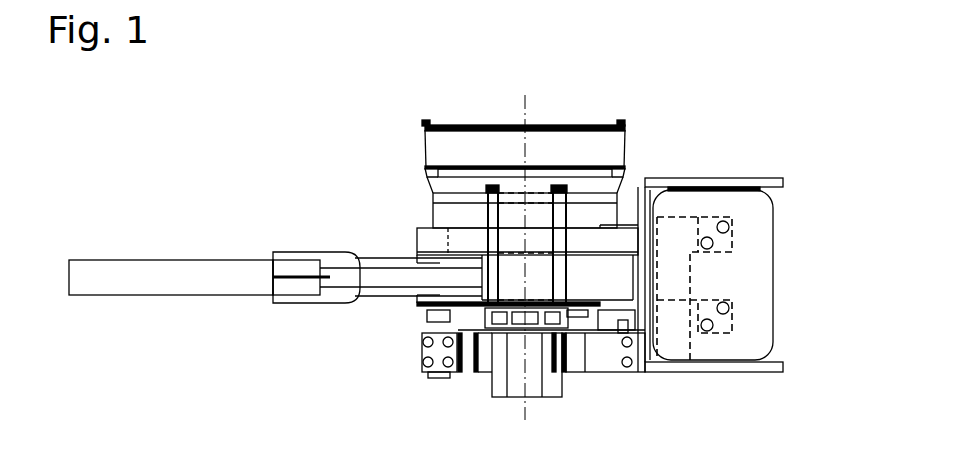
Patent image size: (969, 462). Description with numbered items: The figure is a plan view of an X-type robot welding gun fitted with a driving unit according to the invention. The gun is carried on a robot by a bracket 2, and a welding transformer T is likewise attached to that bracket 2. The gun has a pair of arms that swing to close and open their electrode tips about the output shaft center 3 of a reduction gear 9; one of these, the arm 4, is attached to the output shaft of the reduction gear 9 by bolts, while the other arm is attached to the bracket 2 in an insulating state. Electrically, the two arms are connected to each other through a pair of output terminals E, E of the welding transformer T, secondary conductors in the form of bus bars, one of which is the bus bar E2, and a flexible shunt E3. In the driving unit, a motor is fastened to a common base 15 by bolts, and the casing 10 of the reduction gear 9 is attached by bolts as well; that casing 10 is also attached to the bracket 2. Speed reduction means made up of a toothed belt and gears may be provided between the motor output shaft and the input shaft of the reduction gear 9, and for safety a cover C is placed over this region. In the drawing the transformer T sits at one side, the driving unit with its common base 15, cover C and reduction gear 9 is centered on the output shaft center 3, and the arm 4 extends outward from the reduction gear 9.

The bracket 2 is at (578, 237).
The output shaft center 3 is at (530, 97).
The arm 4 is at (330, 298).
The reduction gear 9 is at (456, 216).
The casing 10 is at (449, 221).
The common base 15 is at (441, 153).
The cover C is at (598, 126).
The welding transformer T is at (727, 200).
The output terminals E is at (735, 240).
The secondary conductor (bus bar) E2 is at (600, 362).
The flexible shunt E3 is at (487, 372).